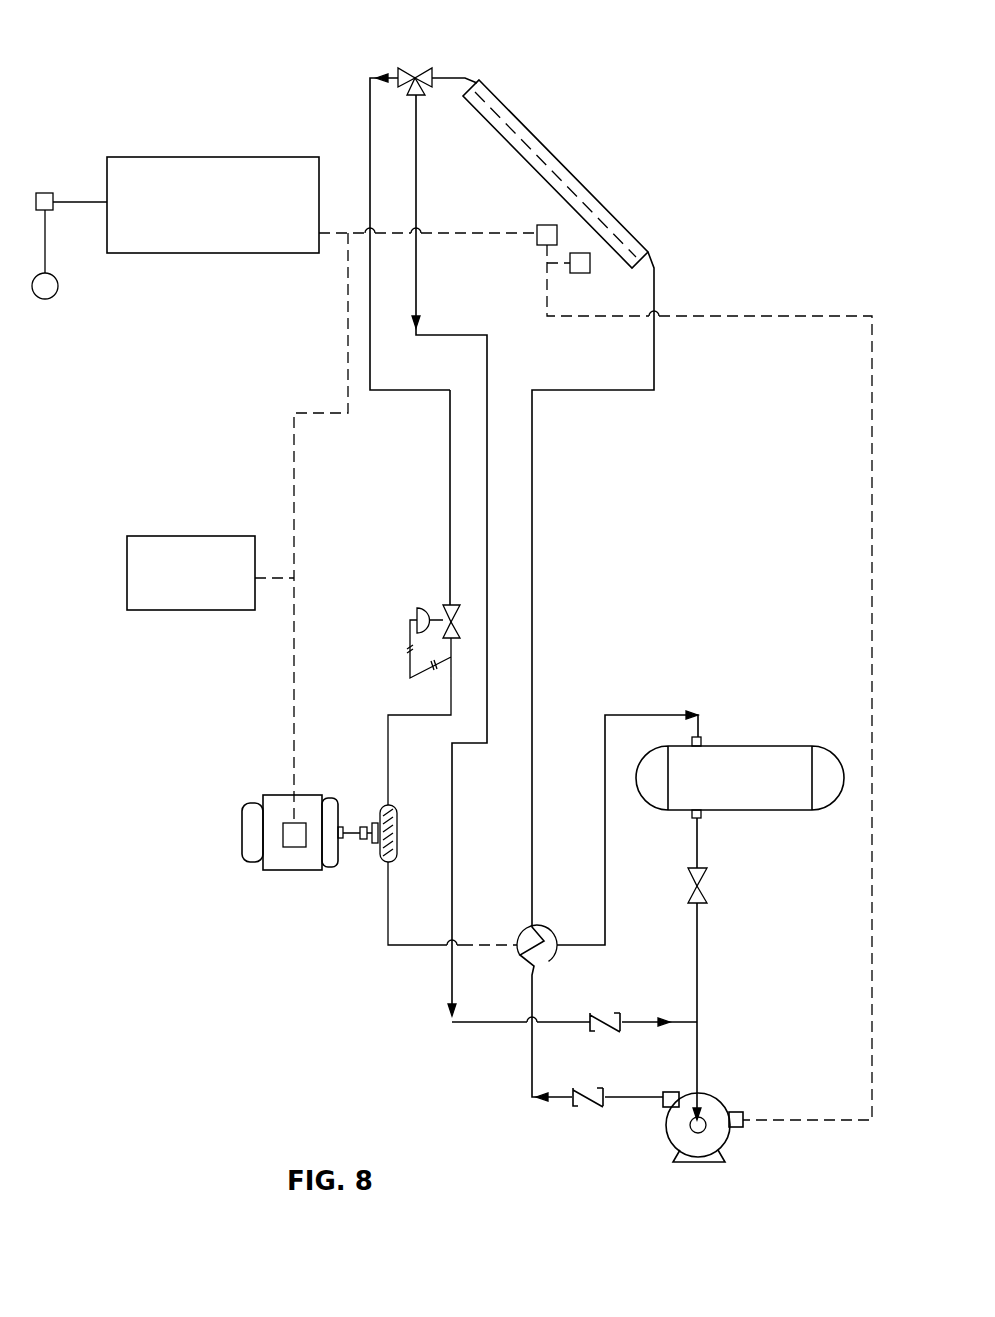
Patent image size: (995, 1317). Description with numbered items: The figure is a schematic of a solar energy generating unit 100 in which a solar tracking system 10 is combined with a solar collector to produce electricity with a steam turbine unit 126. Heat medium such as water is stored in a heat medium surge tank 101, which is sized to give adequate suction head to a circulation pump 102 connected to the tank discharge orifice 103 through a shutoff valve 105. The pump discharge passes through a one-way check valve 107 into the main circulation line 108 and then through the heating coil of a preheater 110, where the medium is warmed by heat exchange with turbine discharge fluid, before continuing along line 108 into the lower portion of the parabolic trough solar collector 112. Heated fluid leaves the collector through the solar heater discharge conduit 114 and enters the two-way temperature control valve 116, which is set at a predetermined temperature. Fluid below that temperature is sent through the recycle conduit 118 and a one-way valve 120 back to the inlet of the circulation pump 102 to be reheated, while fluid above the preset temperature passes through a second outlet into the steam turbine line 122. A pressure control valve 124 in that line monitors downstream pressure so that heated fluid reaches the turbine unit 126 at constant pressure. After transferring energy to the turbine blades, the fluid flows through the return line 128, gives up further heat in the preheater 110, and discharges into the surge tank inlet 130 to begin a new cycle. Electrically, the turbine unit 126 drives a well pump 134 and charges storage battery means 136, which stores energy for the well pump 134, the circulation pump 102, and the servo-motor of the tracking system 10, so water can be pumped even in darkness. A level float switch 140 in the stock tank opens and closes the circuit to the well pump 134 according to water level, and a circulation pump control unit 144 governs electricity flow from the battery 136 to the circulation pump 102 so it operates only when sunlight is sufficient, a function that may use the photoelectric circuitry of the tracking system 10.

The solar tracking system 10 is at (578, 273).
The solar energy generating unit 100 is at (567, 174).
The heat medium surge tank 101 is at (767, 746).
The circulation pump 102 is at (727, 1140).
The tank discharge orifice 103 is at (700, 818).
The shutoff valve 105 is at (708, 893).
The one-way check valve 107 is at (593, 1107).
The main circulation line 108 is at (533, 570).
The preheater 110 is at (545, 925).
The parabolic trough solar collector 112 is at (590, 190).
The solar heater discharge conduit 114 is at (448, 77).
The two-way temperature control valve 116 is at (413, 68).
The recycle conduit 118 is at (416, 287).
The one-way valve 120 is at (592, 1013).
The steam turbine line 122 is at (450, 447).
The pressure control valve 124 is at (443, 607).
The steam turbine unit 126 is at (282, 858).
The return line 128 is at (490, 943).
The surge tank inlet 130 is at (700, 737).
The well pump 134 is at (205, 160).
The storage battery means 136 is at (177, 595).
The level float switch 140 is at (50, 298).
The circulation pump control unit 144 is at (548, 225).